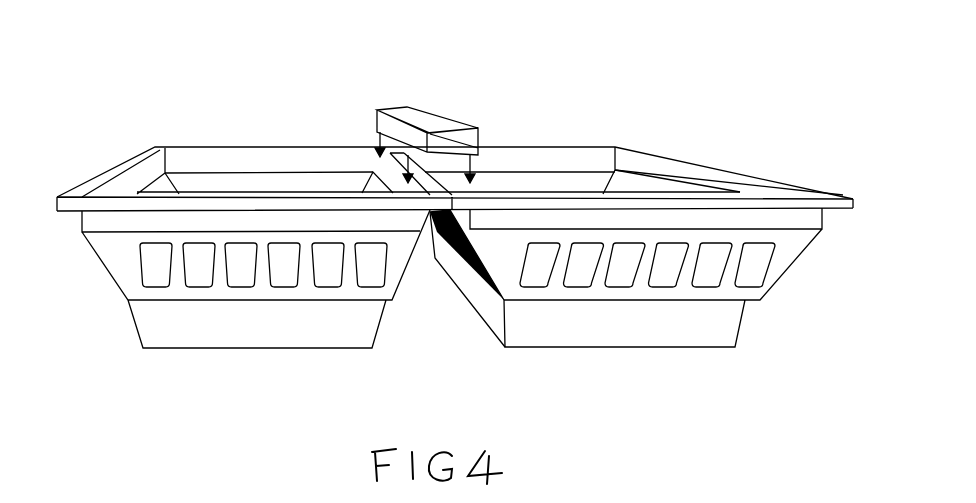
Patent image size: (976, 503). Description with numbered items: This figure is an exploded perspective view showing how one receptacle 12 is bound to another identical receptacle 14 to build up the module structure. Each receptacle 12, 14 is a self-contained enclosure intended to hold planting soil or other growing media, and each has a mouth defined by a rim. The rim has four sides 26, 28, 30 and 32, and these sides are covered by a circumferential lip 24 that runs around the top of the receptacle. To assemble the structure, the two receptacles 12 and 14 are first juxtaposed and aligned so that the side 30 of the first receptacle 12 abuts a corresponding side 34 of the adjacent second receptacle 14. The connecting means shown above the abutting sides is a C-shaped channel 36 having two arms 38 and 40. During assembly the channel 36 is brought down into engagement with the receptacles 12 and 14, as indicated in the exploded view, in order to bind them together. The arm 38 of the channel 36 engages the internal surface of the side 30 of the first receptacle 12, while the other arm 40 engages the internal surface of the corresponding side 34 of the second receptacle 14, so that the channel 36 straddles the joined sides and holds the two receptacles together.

The receptacle 12 is at (235, 330).
The receptacle 14 is at (600, 330).
The circumferential lip 24 is at (518, 124).
The side 26 is at (110, 172).
The side 28 is at (233, 155).
The side 30 is at (385, 163).
The side 32 is at (197, 205).
The side 34 is at (455, 193).
The C-shaped channel 36 is at (433, 122).
The arm 38 is at (376, 122).
The arm 40 is at (482, 137).